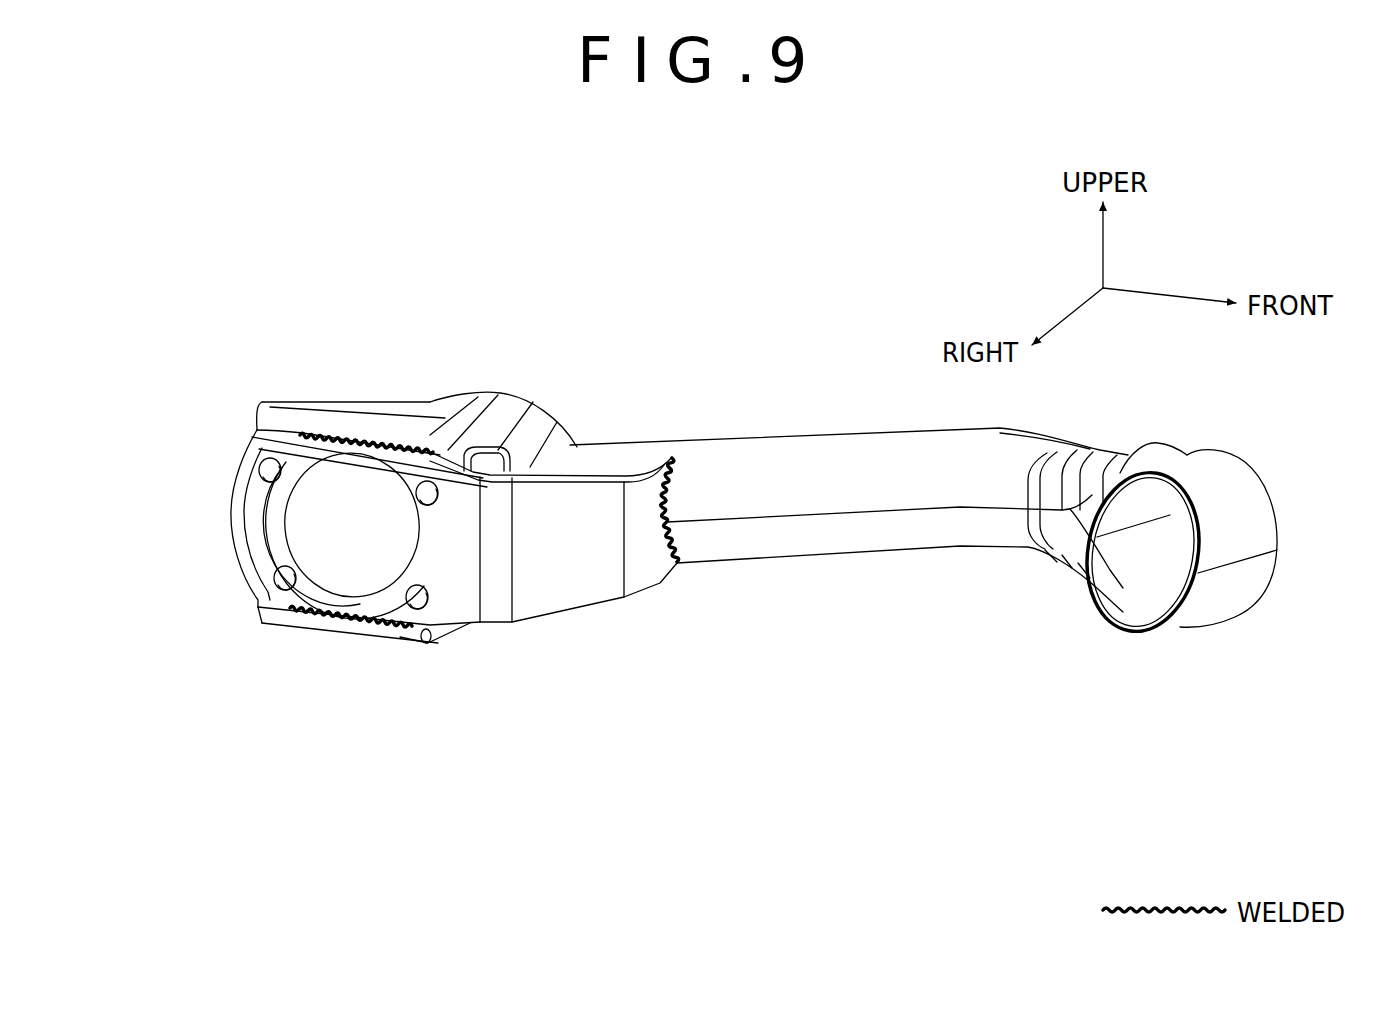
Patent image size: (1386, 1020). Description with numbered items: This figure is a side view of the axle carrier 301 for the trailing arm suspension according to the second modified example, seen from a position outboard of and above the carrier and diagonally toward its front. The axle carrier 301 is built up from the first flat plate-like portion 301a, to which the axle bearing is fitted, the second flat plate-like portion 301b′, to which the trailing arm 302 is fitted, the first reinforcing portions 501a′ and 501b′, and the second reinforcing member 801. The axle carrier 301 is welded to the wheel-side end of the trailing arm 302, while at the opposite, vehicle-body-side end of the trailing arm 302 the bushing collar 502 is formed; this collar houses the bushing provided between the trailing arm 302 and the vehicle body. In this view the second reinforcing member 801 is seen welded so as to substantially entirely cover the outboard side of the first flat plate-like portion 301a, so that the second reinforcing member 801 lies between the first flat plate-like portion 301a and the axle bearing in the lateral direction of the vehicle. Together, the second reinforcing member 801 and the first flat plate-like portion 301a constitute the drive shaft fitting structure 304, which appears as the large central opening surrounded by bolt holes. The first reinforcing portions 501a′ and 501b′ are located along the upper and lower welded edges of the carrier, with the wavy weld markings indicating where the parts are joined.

The axle carrier 301 is at (397, 368).
The first flat plate-like portion 301a is at (240, 508).
The second flat plate-like portion 301b′ is at (574, 443).
The trailing arm 302 is at (892, 528).
The drive shaft fitting structure 304 is at (359, 586).
The first reinforcing portion 501a′ is at (515, 412).
The first reinforcing portion 501b′ is at (395, 644).
The bushing collar 502 is at (1245, 510).
The second reinforcing member 801 is at (567, 583).